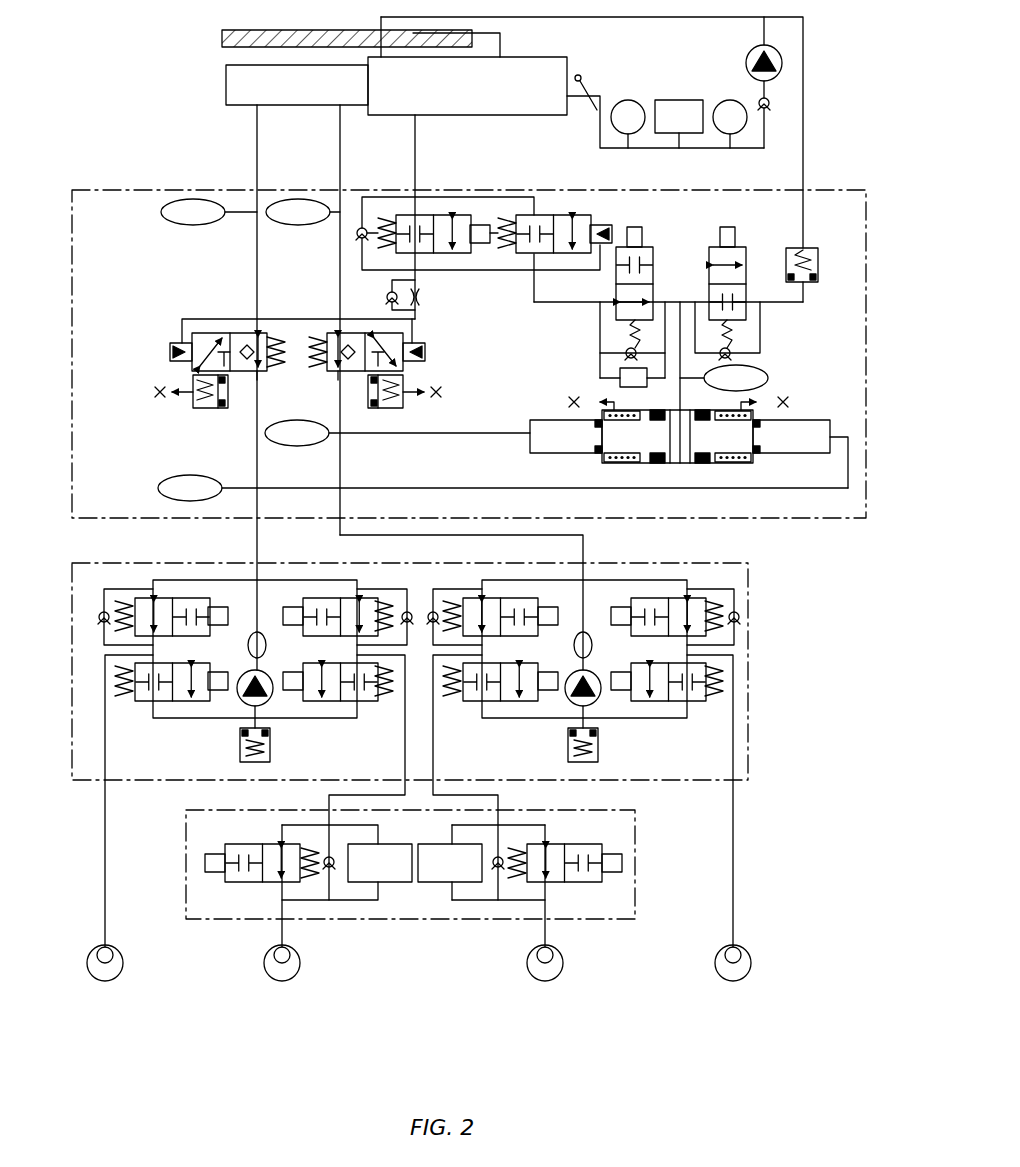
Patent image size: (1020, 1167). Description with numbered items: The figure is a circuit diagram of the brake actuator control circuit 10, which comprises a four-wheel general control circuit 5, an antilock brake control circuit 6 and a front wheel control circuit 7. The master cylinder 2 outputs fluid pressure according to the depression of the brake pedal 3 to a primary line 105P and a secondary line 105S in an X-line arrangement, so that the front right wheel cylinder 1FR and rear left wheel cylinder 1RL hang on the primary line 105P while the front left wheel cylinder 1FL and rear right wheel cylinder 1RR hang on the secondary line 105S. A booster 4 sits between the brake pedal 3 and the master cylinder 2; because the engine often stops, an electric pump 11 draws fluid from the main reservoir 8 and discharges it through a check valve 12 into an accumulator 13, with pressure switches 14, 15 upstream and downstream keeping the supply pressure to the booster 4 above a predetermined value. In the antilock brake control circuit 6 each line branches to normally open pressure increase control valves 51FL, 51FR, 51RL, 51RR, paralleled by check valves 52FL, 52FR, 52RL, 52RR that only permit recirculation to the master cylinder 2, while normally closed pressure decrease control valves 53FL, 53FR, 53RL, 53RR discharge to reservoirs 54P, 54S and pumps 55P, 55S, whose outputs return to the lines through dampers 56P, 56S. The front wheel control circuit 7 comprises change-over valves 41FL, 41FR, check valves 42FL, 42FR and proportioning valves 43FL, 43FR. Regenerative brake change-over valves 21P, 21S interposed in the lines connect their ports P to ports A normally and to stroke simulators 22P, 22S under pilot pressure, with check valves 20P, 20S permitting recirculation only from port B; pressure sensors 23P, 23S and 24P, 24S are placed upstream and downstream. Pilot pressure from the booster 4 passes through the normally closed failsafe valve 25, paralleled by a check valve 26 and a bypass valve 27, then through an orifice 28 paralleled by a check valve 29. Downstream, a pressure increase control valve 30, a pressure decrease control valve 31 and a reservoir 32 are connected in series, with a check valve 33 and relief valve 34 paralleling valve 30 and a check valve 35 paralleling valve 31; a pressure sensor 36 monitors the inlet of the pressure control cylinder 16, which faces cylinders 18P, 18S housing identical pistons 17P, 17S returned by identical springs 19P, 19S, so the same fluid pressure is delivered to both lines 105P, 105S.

The rear right wheel cylinder 1RR is at (128, 965).
The front left wheel cylinder 1FL is at (305, 965).
The front right wheel cylinder 1FR is at (568, 965).
The rear left wheel cylinder 1RL is at (756, 965).
The master cylinder 2 is at (222, 78).
The brake pedal 3 is at (596, 92).
The booster 4 is at (460, 118).
The four-wheel general control circuit 5 is at (812, 522).
The antilock brake control circuit 6 is at (752, 688).
The front wheel control circuit 7 is at (640, 858).
The main reservoir 8 is at (220, 36).
The brake actuator control circuit 10 is at (130, 185).
The electric pump 11 is at (784, 55).
The check valve 12 is at (770, 110).
The accumulator 13 is at (675, 100).
The pressure switch 14 is at (725, 100).
The pressure switch 15 is at (630, 100).
The pressure control cylinder 16 is at (804, 412).
The piston 17P is at (585, 435).
The piston 17S is at (755, 437).
The cylinder 18P is at (655, 466).
The cylinder 18S is at (700, 466).
The return spring 19P is at (610, 462).
The return spring 19S is at (745, 465).
The check valve 20S is at (245, 333).
The check valve 20P is at (375, 300).
The regenerative brake change-over valve 21S is at (275, 375).
The regenerative brake change-over valve 21P is at (325, 375).
The stroke simulator 22S is at (222, 412).
The stroke simulator 22P is at (408, 408).
The pressure sensor 23S is at (193, 225).
The pressure sensor 23P is at (296, 225).
The pressure sensor 24S is at (180, 476).
The pressure sensor 24P is at (292, 446).
The failsafe valve 25 is at (458, 256).
The check valve 26 is at (358, 226).
The bypass valve 27 is at (563, 215).
The orifice 28 is at (424, 297).
The check valve 29 is at (385, 293).
The pressure increase control valve 30 is at (658, 250).
The pressure decrease control valve 31 is at (750, 250).
The reservoir 32 is at (822, 258).
The check valve 33 is at (622, 352).
The relief valve 34 is at (610, 383).
The check valve 35 is at (735, 350).
The pressure sensor 36 is at (765, 370).
The change-over valve 41FL is at (268, 885).
The change-over valve 41FR is at (558, 885).
The check valve 42FL is at (340, 870).
The check valve 42FR is at (490, 870).
The proportioning valve 43FL is at (388, 885).
The proportioning valve 43FR is at (452, 845).
The pressure increase control valve 51RR is at (180, 597).
The pressure increase control valve 51FL is at (330, 597).
The pressure increase control valve 51FR is at (505, 597).
The pressure increase control valve 51RL is at (660, 597).
The check valve 52RR is at (104, 605).
The check valve 52FL is at (406, 605).
The check valve 52FR is at (433, 605).
The check valve 52RL is at (742, 612).
The pressure decrease control valve 53RR is at (150, 702).
The pressure decrease control valve 53FL is at (360, 702).
The pressure decrease control valve 53FR is at (478, 702).
The pressure decrease control valve 53RL is at (690, 702).
The reservoir 54S is at (272, 745).
The reservoir 54P is at (600, 745).
The pump 55S is at (245, 674).
The pump 55P is at (572, 674).
The damper 56S is at (268, 647).
The damper 56P is at (595, 647).
The secondary line 105S is at (256, 150).
The primary line 105P is at (341, 130).